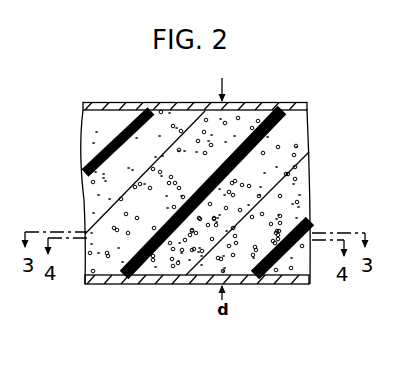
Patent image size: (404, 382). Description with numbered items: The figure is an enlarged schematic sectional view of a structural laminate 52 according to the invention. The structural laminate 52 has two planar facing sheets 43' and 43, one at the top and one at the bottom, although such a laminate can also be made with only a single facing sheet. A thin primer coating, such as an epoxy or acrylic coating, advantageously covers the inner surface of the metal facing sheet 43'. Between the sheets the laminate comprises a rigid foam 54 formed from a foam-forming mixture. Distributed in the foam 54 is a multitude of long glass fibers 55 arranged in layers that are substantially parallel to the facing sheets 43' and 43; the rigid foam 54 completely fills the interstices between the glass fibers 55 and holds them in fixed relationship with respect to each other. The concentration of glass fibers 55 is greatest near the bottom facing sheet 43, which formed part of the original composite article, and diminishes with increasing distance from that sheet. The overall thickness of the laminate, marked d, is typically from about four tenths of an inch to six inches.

The bottom facing sheet 43 is at (197, 298).
The facing sheet 43' is at (197, 175).
The structural laminate 52 is at (259, 99).
The rigid foam 54 is at (300, 132).
The glass fibers 55 is at (93, 214).